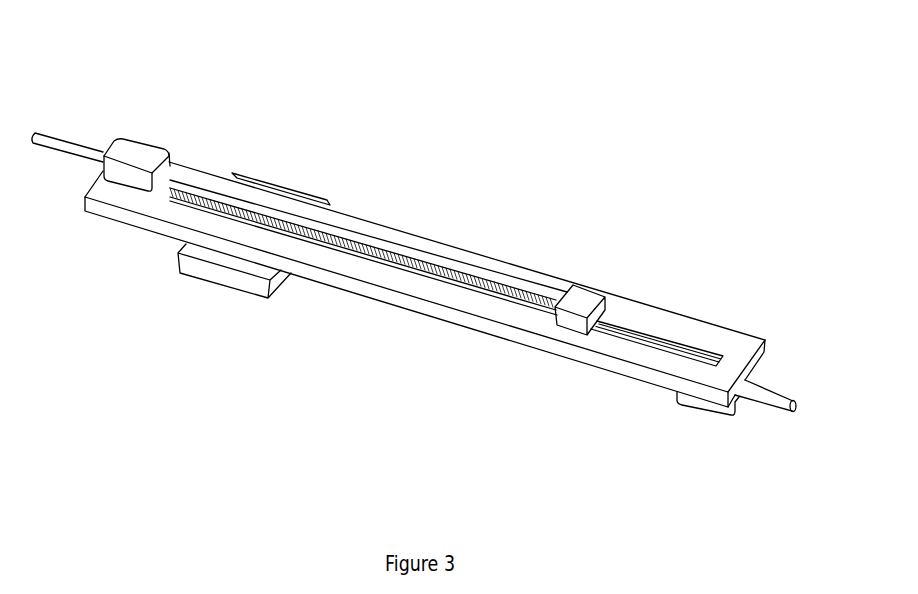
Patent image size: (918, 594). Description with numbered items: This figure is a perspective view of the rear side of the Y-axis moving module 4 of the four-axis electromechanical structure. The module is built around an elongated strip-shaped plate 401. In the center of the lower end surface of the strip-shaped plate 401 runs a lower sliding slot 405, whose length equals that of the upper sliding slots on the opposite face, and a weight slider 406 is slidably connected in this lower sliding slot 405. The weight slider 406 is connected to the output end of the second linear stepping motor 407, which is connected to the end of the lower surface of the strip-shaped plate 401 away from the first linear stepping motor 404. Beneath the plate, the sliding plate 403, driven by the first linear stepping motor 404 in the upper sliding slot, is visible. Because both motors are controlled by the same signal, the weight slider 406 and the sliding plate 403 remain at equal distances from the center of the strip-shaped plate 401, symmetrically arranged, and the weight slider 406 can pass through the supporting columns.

The Y-axis moving module 4 is at (363, 177).
The strip-shaped plate 401 is at (373, 272).
The sliding plate 403 is at (210, 272).
The first linear stepping motor 404 is at (697, 402).
The lower sliding slot 405 is at (686, 346).
The weight slider 406 is at (579, 297).
The second linear stepping motor 407 is at (130, 157).